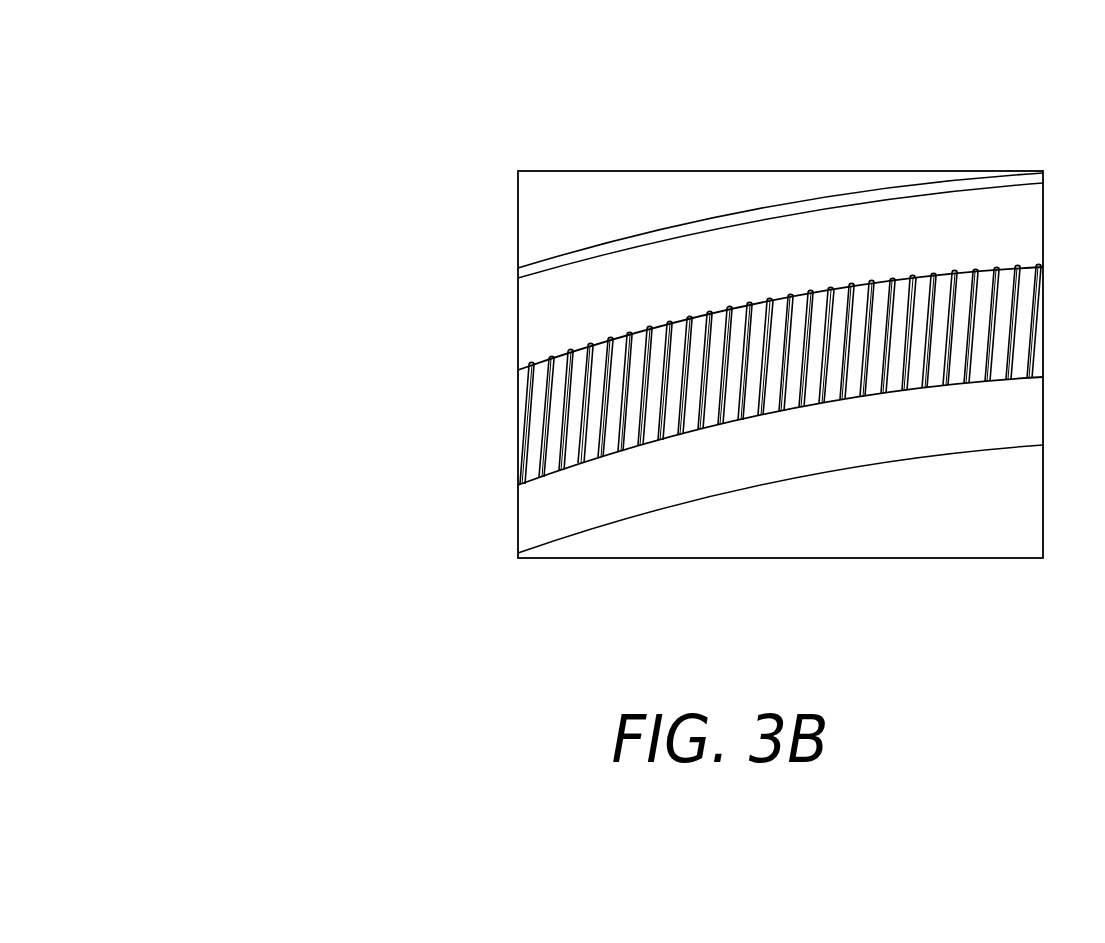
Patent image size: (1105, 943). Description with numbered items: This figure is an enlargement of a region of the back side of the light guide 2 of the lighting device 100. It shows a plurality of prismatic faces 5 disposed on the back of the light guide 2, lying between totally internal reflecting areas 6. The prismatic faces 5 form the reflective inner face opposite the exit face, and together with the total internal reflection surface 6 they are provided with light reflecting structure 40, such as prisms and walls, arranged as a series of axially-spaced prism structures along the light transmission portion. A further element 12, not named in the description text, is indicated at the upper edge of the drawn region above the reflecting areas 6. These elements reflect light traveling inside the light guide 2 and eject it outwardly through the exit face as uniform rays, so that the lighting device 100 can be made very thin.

The lighting device 100 is at (927, 110).
The casing 12 is at (517, 252).
The light reflecting structure 40 is at (705, 425).
The total internal reflection surface 6 is at (753, 400).
The prismatic face 5 is at (698, 428).
The light guide 2 is at (990, 422).